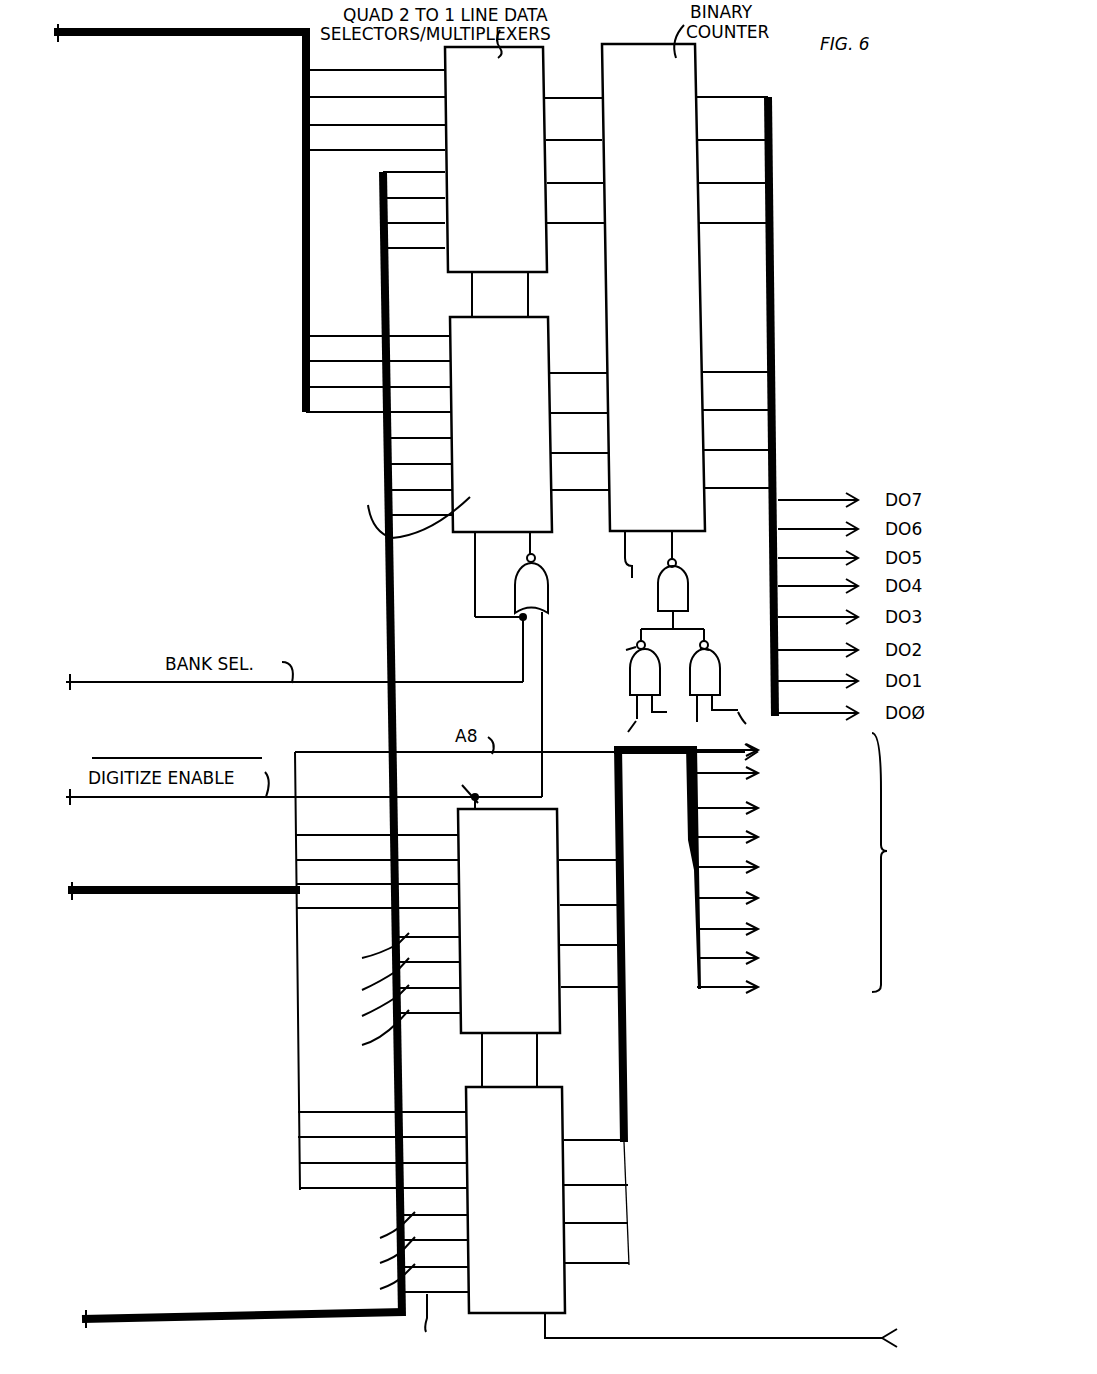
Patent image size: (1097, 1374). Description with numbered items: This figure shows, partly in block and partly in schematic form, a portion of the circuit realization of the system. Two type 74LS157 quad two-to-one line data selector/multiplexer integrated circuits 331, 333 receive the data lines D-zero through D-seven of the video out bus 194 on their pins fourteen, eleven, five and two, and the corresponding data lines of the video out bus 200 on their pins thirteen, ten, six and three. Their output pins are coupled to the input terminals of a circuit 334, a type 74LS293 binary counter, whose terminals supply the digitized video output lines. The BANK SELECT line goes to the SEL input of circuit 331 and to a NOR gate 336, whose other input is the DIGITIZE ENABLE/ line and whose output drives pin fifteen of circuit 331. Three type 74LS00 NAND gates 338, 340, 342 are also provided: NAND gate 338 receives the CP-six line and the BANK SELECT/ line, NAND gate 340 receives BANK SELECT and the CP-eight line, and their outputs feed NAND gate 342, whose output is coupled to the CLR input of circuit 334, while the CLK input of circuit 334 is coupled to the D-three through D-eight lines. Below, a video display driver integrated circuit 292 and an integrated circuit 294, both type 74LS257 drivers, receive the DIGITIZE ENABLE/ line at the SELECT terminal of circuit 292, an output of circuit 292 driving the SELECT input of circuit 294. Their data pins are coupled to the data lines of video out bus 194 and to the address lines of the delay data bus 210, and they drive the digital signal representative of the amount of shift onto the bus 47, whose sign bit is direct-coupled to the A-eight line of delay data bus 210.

The video out bus 200 is at (158, 36).
The delay data bus 210 is at (188, 886).
The video out bus 194 is at (188, 1314).
The integrated circuit 331 is at (528, 350).
The integrated circuit 333 is at (540, 243).
The circuit 334 is at (700, 296).
The NOR gate 336 is at (547, 590).
The NAND gate 338 is at (634, 686).
The NAND gate 340 is at (718, 670).
The NAND gate 342 is at (672, 592).
The video display driver integrated circuit 292 is at (535, 998).
The integrated circuit 294 is at (546, 1288).
The bus 47 is at (808, 865).